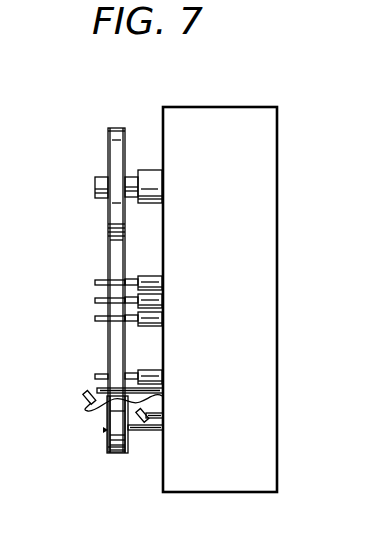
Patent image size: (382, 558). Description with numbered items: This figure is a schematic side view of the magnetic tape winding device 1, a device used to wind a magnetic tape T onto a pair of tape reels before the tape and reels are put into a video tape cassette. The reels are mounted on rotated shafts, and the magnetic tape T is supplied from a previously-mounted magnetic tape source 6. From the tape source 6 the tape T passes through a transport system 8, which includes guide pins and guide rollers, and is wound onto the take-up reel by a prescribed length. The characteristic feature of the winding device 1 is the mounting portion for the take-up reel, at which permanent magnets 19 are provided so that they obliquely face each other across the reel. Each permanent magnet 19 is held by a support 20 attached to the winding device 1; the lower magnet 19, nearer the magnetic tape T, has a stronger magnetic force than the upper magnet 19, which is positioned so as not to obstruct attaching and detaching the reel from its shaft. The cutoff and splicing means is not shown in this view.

The magnetic tape winding device 1 is at (280, 190).
The magnetic tape source 6 is at (108, 133).
The magnetic tape T is at (108, 229).
The transport system 8 is at (95, 303).
The permanent magnets 19 is at (88, 391).
The support 20 is at (144, 410).